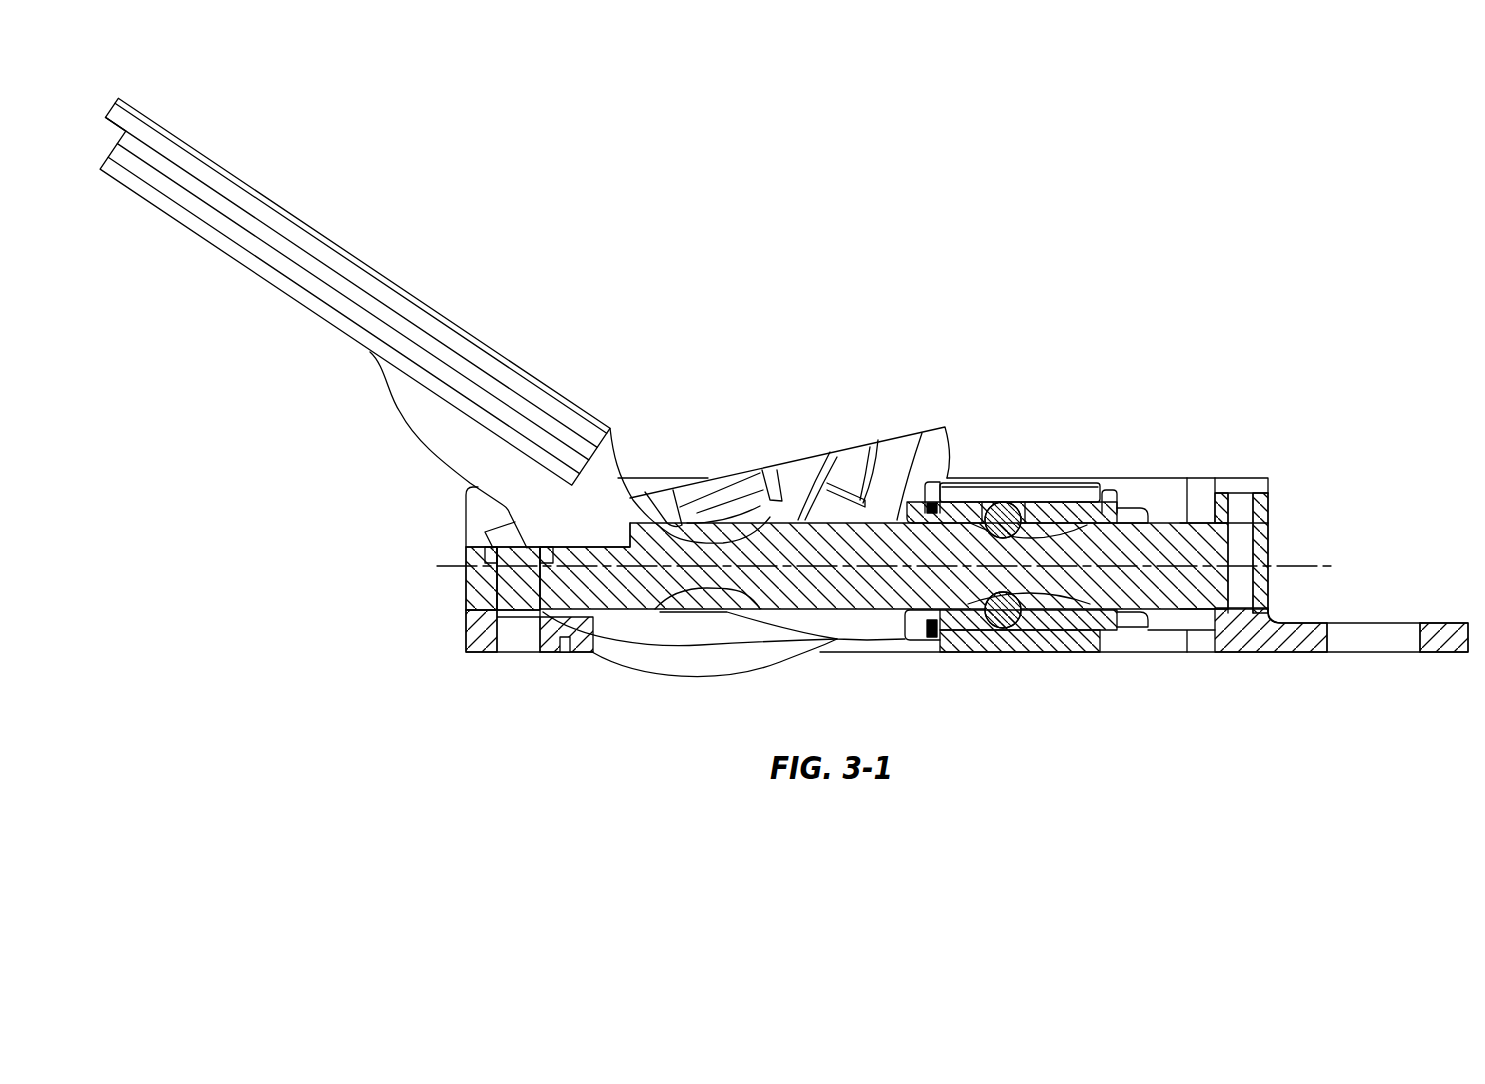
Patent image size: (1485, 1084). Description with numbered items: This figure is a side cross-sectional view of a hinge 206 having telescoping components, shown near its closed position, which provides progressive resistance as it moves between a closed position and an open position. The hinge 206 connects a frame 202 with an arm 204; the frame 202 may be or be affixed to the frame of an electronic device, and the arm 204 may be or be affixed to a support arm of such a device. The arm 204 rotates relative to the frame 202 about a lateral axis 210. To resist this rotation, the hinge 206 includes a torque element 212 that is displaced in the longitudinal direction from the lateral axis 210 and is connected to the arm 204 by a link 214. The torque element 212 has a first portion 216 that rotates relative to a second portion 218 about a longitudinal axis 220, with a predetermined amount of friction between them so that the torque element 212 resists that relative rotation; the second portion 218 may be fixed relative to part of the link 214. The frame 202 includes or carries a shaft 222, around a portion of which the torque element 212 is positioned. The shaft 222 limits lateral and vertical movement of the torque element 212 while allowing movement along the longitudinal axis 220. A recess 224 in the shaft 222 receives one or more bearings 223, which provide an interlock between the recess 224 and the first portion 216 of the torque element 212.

The frame 202 is at (470, 653).
The arm 204 is at (485, 355).
The hinge 206 is at (1375, 368).
The lateral axis 210 is at (706, 436).
The torque element 212 is at (1043, 472).
The link 214 is at (858, 627).
The first portion 216 is at (1110, 508).
The second portion 218 is at (973, 483).
The longitudinal axis 220 is at (1313, 566).
The shaft 222 is at (1213, 610).
The bearings 223 is at (1013, 627).
The recess 224 is at (1060, 603).